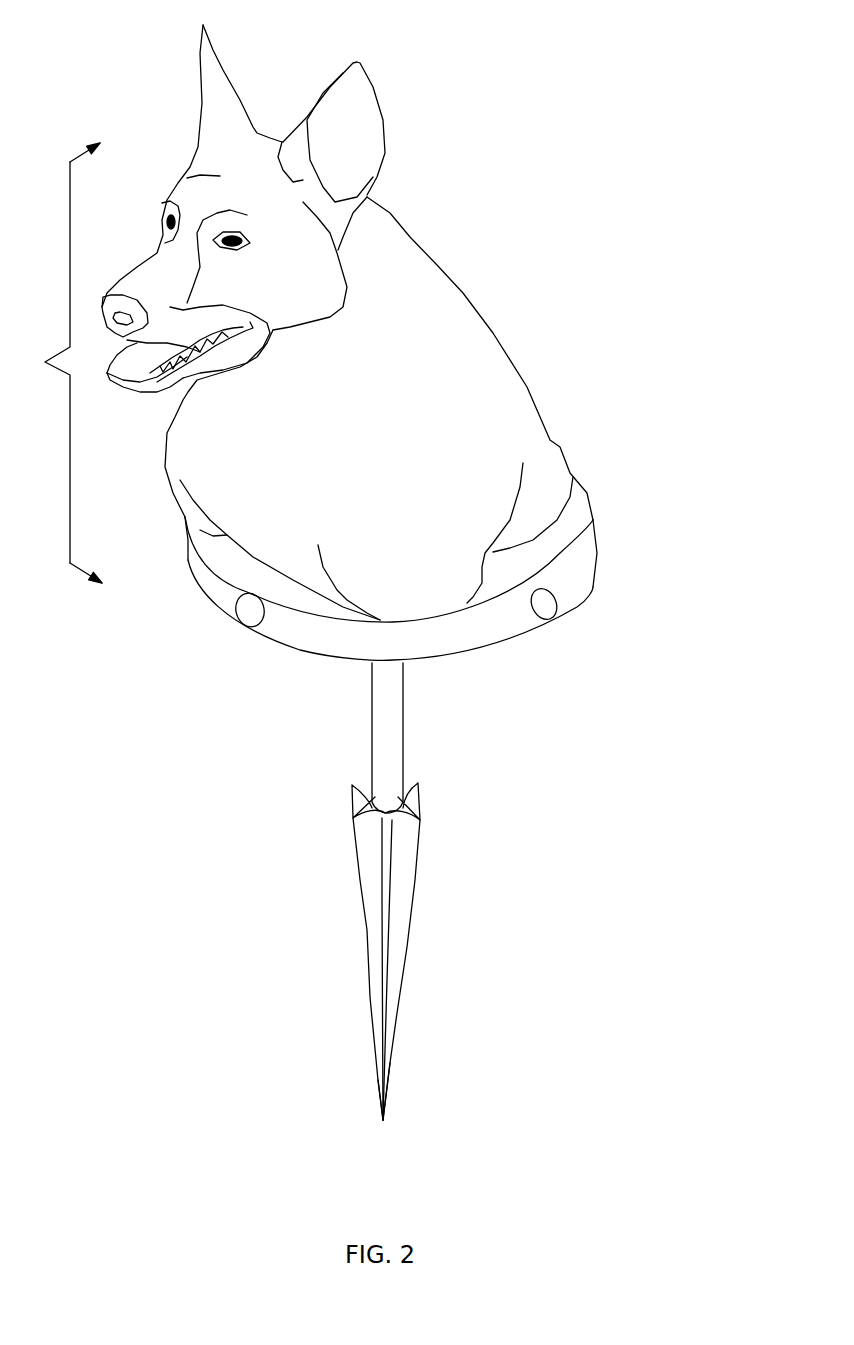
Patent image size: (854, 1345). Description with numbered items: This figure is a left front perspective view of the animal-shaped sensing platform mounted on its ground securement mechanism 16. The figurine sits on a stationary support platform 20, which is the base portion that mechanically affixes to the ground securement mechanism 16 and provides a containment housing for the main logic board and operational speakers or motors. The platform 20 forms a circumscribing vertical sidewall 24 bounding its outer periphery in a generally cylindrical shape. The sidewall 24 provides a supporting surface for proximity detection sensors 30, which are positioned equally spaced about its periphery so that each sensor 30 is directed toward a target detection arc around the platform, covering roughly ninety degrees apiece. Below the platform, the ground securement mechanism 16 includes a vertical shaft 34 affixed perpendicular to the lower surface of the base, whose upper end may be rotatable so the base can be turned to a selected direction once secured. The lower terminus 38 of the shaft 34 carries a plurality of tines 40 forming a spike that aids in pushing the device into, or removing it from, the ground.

The ground securement mechanism 16 is at (281, 1003).
The support platform 20 is at (545, 552).
The vertical sidewall 24 is at (490, 627).
The proximity detection sensor 30 is at (248, 618).
The vertical shaft 34 is at (370, 767).
The lower terminus 38 is at (383, 1120).
The tines 40 is at (365, 927).